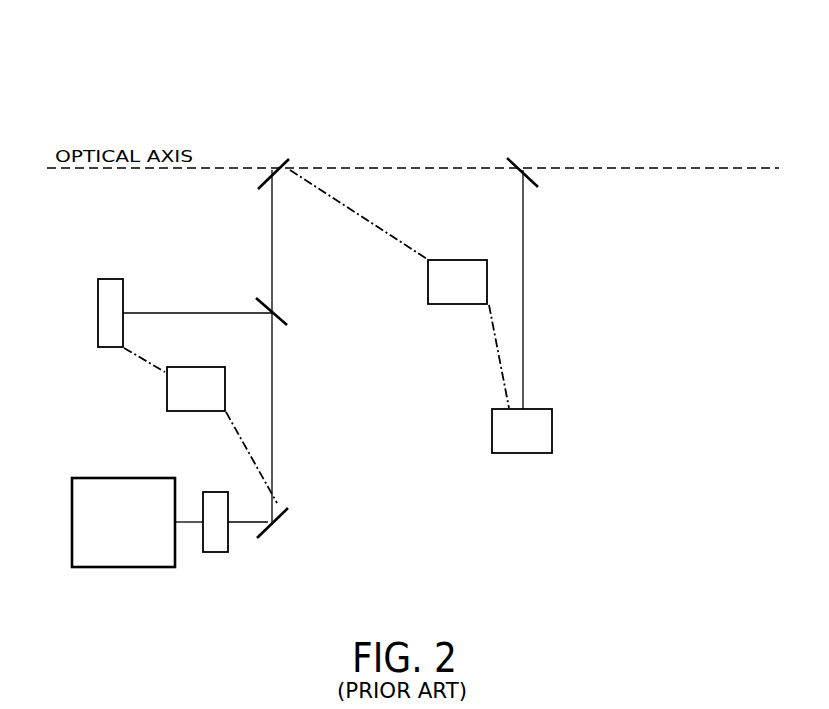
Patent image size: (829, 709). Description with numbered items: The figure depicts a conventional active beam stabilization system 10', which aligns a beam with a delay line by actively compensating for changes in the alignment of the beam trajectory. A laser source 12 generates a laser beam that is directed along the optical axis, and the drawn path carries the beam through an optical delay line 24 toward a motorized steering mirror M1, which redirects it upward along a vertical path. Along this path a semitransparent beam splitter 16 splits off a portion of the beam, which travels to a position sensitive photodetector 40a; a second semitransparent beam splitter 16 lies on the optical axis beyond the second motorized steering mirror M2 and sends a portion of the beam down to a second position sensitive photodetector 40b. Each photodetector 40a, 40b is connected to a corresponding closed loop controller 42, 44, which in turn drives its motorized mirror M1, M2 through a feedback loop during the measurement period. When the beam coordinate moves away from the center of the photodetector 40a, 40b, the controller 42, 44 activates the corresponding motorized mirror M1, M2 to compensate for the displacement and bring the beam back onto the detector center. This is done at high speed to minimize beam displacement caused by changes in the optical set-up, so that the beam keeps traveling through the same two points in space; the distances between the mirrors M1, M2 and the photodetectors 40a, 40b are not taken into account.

The active beam stabilization system 10' is at (83, 72).
The laser source 12 is at (72, 524).
The semitransparent beam splitter 16 is at (280, 317).
The optical delay line 24 is at (216, 562).
The position sensitive photodetector 40a is at (98, 311).
The position sensitive photodetector 40b is at (553, 432).
The closed loop controller 42 is at (167, 390).
The closed loop controller 44 is at (428, 283).
The motorized steering mirror M1 is at (283, 527).
The motorized steering mirror M2 is at (263, 177).